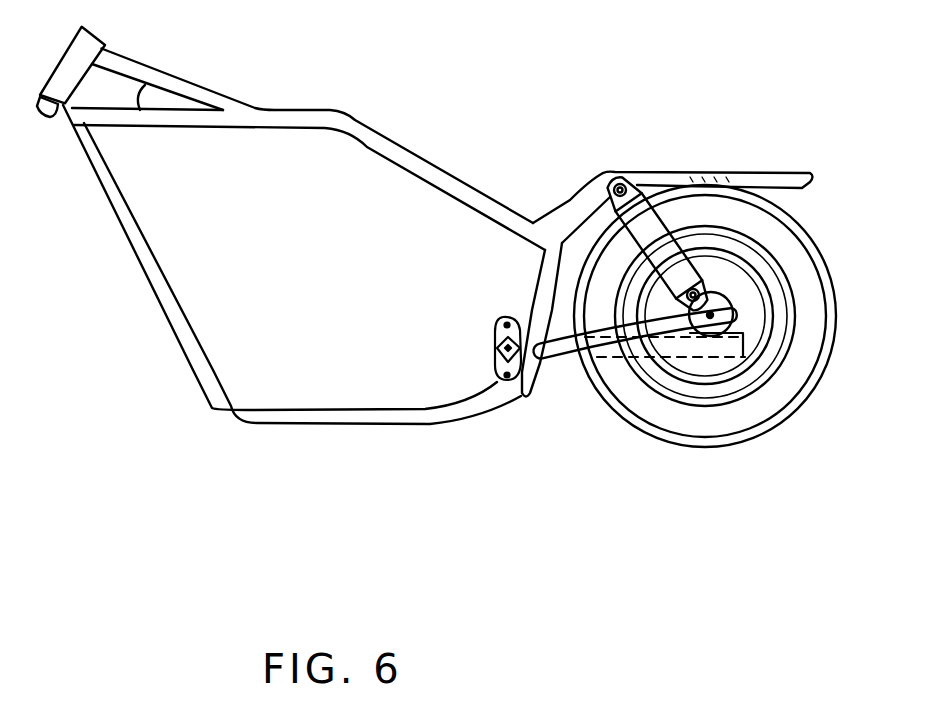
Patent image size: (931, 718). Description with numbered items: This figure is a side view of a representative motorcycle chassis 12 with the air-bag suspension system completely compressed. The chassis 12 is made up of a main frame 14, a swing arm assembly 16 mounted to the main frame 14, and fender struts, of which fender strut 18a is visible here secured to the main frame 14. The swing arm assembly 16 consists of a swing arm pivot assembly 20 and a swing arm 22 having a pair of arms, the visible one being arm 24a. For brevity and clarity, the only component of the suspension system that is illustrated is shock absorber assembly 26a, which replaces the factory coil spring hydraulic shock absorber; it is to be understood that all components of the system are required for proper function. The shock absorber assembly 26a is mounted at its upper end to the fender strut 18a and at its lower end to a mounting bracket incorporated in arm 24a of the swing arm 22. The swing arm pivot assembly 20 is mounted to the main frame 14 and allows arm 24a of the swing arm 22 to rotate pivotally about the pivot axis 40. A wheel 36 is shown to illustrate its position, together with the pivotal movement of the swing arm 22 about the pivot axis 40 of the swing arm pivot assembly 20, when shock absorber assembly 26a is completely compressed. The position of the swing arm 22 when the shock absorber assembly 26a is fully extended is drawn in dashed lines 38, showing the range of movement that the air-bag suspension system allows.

The motorcycle chassis 12 is at (357, 118).
The main frame 14 is at (442, 177).
The swing arm assembly 16 is at (498, 330).
The fender strut 18a is at (660, 177).
The swing arm pivot assembly 20 is at (497, 352).
The swing arm 22 is at (562, 362).
The arm 24a is at (674, 334).
The shock absorber assembly 26a is at (660, 241).
The wheel 36 is at (797, 404).
The dashed lines 38 is at (742, 343).
The pivot axis 40 is at (524, 370).